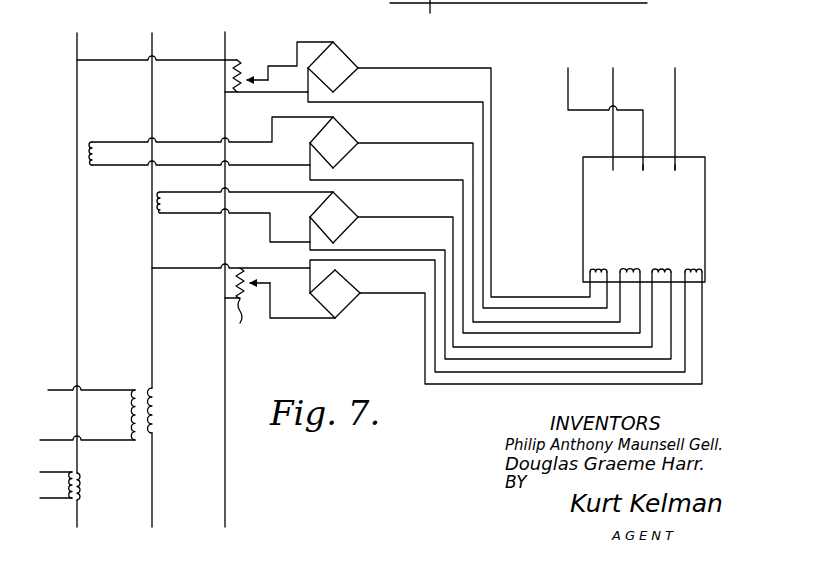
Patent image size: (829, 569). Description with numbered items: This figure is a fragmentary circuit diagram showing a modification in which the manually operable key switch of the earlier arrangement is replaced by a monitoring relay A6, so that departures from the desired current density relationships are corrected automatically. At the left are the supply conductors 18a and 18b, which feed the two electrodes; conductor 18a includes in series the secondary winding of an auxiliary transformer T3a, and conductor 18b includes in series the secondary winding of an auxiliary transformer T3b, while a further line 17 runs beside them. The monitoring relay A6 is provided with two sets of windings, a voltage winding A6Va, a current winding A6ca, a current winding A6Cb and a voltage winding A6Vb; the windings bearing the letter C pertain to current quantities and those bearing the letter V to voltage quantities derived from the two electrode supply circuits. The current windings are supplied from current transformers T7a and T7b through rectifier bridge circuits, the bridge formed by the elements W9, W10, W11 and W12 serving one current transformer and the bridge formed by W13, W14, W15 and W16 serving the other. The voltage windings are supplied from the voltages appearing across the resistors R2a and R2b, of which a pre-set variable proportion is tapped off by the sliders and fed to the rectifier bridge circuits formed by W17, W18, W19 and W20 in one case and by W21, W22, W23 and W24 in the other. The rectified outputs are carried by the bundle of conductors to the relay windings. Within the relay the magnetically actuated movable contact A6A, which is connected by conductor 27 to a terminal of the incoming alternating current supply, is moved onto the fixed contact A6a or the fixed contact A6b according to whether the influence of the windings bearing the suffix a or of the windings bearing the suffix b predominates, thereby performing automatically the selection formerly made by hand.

The conductor 18a is at (77, 33).
The conductor 18b is at (152, 33).
The supply line 17 is at (225, 32).
The resistor R2a is at (249, 66).
The resistor R2b is at (250, 310).
The rectifier bridge circuit element W9 is at (319, 130).
The rectifier bridge circuit element W10 is at (343, 126).
The rectifier bridge circuit element W11 is at (321, 156).
The rectifier bridge circuit element W12 is at (348, 155).
The rectifier bridge circuit element W13 is at (320, 204).
The rectifier bridge circuit element W14 is at (346, 203).
The rectifier bridge circuit element W15 is at (320, 231).
The rectifier bridge circuit element W16 is at (348, 230).
The rectifier bridge circuit element W17 is at (318, 56).
The rectifier bridge circuit element W18 is at (348, 56).
The rectifier bridge circuit element W19 is at (316, 78).
The rectifier bridge circuit element W20 is at (345, 82).
The rectifier bridge circuit element W21 is at (320, 282).
The rectifier bridge circuit element W22 is at (347, 279).
The rectifier bridge circuit element W23 is at (320, 306).
The rectifier bridge circuit element W24 is at (348, 309).
The current transformer T7a is at (64, 153).
The current transformer T7b is at (135, 203).
The auxiliary transformer T3a is at (157, 402).
The auxiliary transformer T3b is at (56, 502).
The conductor 27 is at (566, 86).
The movable contact A6A is at (644, 119).
The fixed contact A6a is at (629, 170).
The fixed contact A6b is at (659, 170).
The monitoring relay A6 is at (706, 217).
The voltage winding A6Va is at (595, 262).
The current winding A6ca is at (626, 264).
The current winding A6Cb is at (655, 263).
The voltage winding A6Vb is at (690, 266).